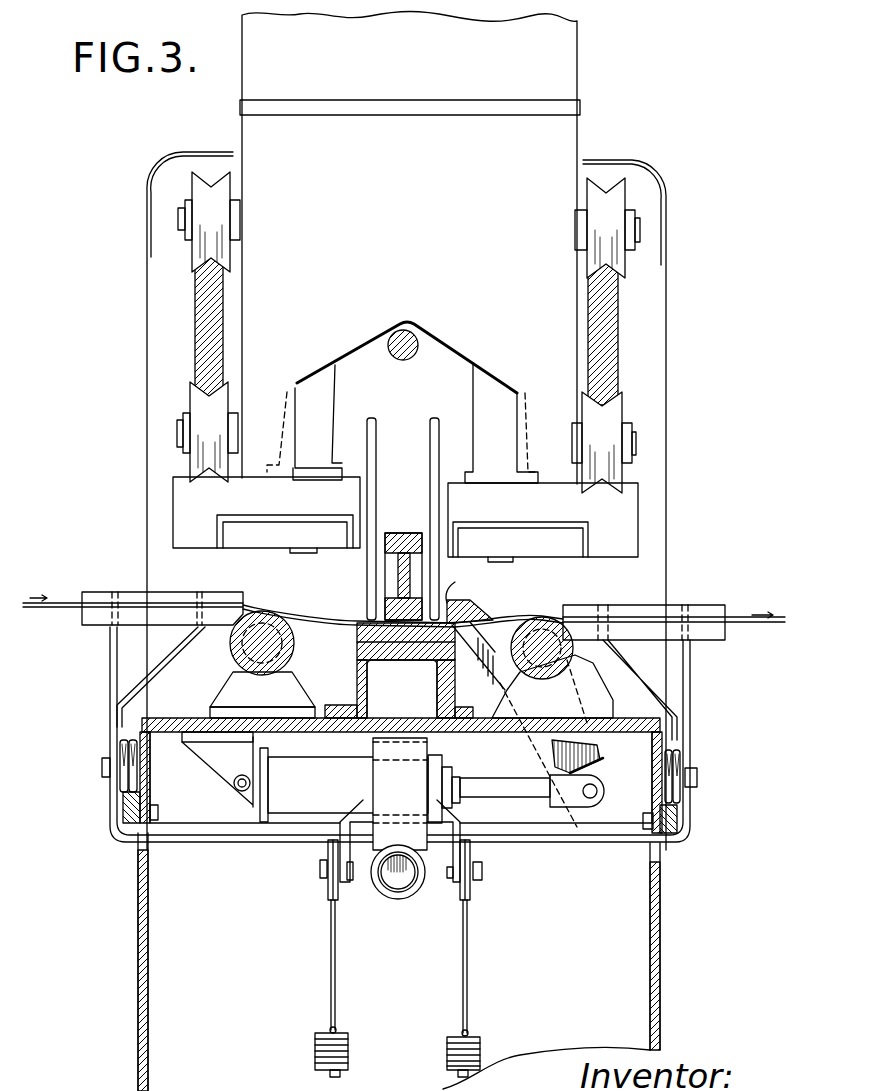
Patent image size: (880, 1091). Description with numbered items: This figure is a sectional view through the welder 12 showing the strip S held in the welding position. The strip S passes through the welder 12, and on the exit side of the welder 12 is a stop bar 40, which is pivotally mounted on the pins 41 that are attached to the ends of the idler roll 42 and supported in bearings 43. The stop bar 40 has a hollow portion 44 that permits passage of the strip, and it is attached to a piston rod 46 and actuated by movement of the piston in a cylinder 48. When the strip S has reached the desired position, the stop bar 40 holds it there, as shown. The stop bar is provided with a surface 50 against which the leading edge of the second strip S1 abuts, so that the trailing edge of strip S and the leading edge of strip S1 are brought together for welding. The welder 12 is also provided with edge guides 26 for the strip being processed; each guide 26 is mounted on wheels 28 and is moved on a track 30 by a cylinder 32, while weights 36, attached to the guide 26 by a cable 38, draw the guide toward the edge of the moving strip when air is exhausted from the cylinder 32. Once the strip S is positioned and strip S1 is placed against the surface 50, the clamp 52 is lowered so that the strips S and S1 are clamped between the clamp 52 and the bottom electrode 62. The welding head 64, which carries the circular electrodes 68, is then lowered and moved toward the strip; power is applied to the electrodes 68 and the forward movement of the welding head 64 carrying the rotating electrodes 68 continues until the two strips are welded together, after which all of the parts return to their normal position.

The welder 12 is at (420, 272).
The edge guides 26 is at (96, 596).
The wheels 28 is at (128, 760).
The track 30 is at (125, 805).
The cylinder 32 is at (397, 894).
The weights 36 is at (341, 1053).
The cable 38 is at (336, 973).
The stop bar 40 is at (550, 755).
The pins 41 is at (541, 615).
The idler roll 42 is at (240, 663).
The bearings 43 is at (221, 694).
The hollow portion 44 is at (470, 612).
The piston rod 46 is at (497, 795).
The cylinder 48 is at (310, 800).
The surface 50 is at (463, 588).
The clamp 52 is at (397, 537).
The bottom electrode 62 is at (358, 638).
The welding head 64 is at (483, 403).
The circular electrodes 68 is at (435, 433).
The strip S is at (745, 614).
The strip S1 is at (302, 616).